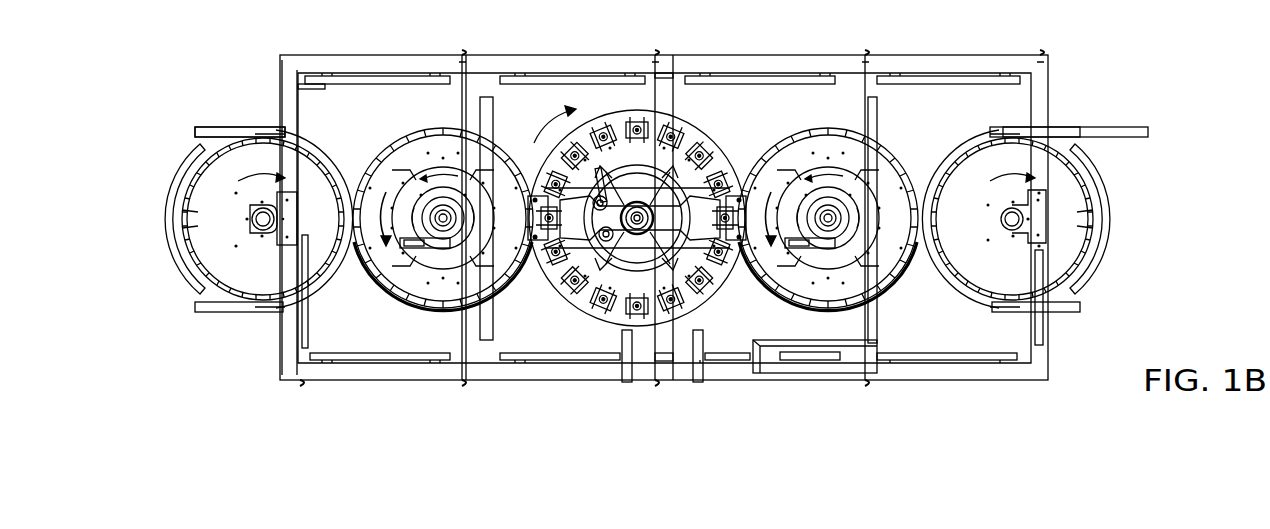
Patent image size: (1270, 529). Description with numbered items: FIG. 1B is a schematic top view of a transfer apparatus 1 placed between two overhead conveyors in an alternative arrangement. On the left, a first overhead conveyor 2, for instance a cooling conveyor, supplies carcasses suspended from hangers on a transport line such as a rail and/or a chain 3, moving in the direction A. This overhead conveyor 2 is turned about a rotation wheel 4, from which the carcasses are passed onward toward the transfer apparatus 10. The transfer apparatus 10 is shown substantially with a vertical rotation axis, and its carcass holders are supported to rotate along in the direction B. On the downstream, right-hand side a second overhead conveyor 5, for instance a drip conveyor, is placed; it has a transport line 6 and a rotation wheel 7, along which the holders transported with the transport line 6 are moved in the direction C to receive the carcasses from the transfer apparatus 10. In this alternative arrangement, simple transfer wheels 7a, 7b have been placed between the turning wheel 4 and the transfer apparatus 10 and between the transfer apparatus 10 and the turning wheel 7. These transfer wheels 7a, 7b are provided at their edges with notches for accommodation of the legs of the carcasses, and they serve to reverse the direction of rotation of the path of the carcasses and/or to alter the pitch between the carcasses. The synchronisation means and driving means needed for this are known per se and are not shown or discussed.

The transfer apparatus 1 is at (654, 193).
The first overhead conveyor 2 is at (112, 230).
The rail and/or chain 3 is at (210, 130).
The rotation wheel 4 is at (329, 217).
The second overhead conveyor 5 is at (1167, 230).
The transport line 6 is at (1108, 130).
The rotation wheel 7 is at (970, 213).
The transfer wheel 7a is at (415, 128).
The transfer wheel 7b is at (825, 140).
The transfer apparatus 10 is at (693, 128).